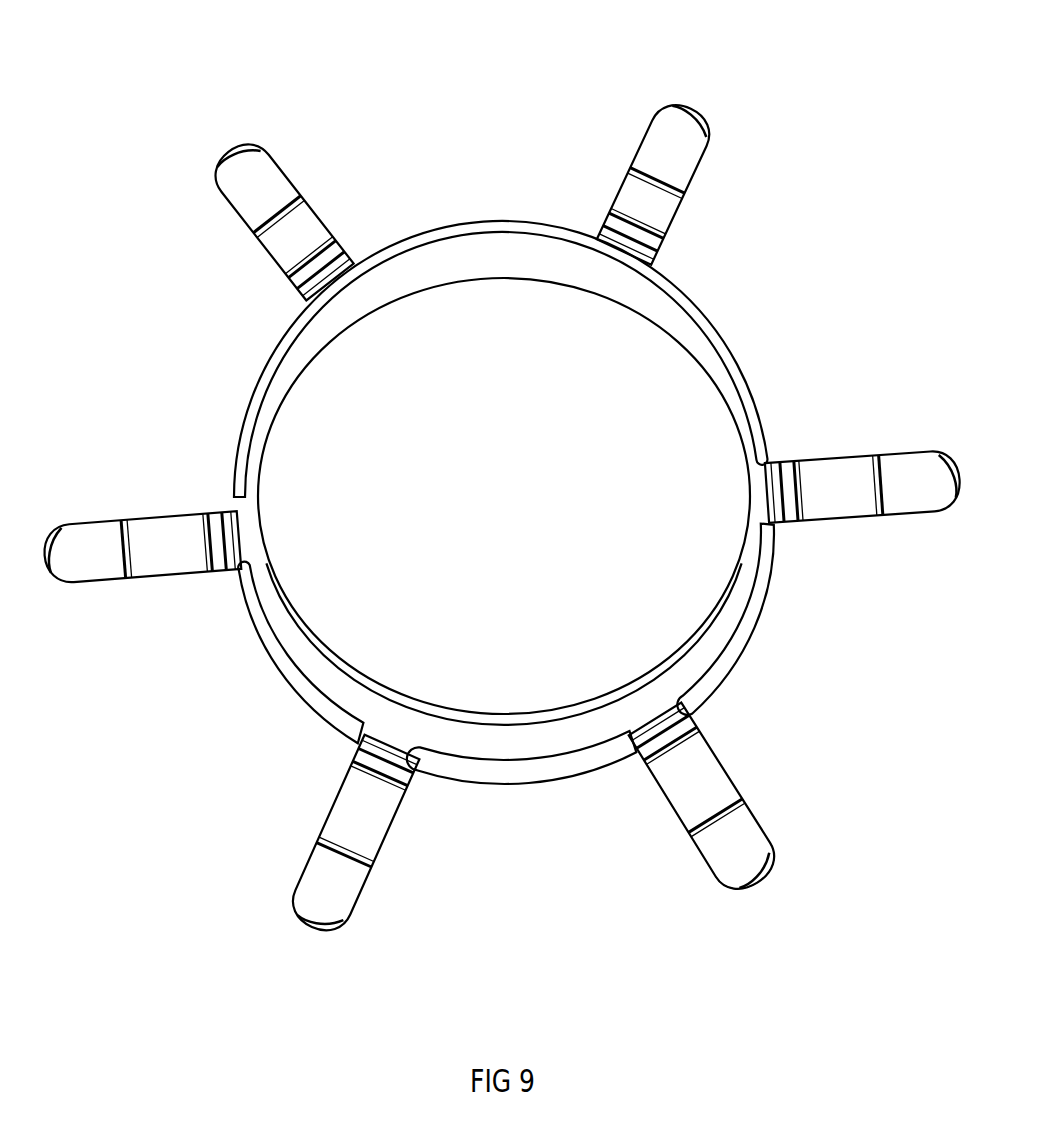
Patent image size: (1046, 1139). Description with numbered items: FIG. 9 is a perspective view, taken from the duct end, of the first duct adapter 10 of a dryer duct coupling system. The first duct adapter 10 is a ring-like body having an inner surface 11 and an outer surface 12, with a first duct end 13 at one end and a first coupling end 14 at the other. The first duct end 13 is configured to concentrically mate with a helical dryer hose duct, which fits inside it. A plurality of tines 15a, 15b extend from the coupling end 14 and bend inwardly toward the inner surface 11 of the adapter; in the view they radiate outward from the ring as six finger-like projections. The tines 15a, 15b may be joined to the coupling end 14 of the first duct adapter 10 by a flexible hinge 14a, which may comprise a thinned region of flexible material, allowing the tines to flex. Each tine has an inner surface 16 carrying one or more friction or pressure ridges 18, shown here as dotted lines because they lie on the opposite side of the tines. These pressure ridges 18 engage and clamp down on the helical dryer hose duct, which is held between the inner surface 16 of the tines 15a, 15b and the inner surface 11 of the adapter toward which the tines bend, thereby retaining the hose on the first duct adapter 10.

The first duct adapter 10 is at (328, 83).
The inner surface 11 is at (423, 267).
The outer surface 12 is at (538, 748).
The first duct end 13 is at (722, 347).
The first coupling end 14 is at (752, 608).
The flexible hinge 14a is at (658, 720).
The tine 15a is at (305, 246).
The tine 15b is at (700, 780).
The inner surface of the plurality of tines 16 is at (747, 850).
The friction ridge 18 is at (690, 742).